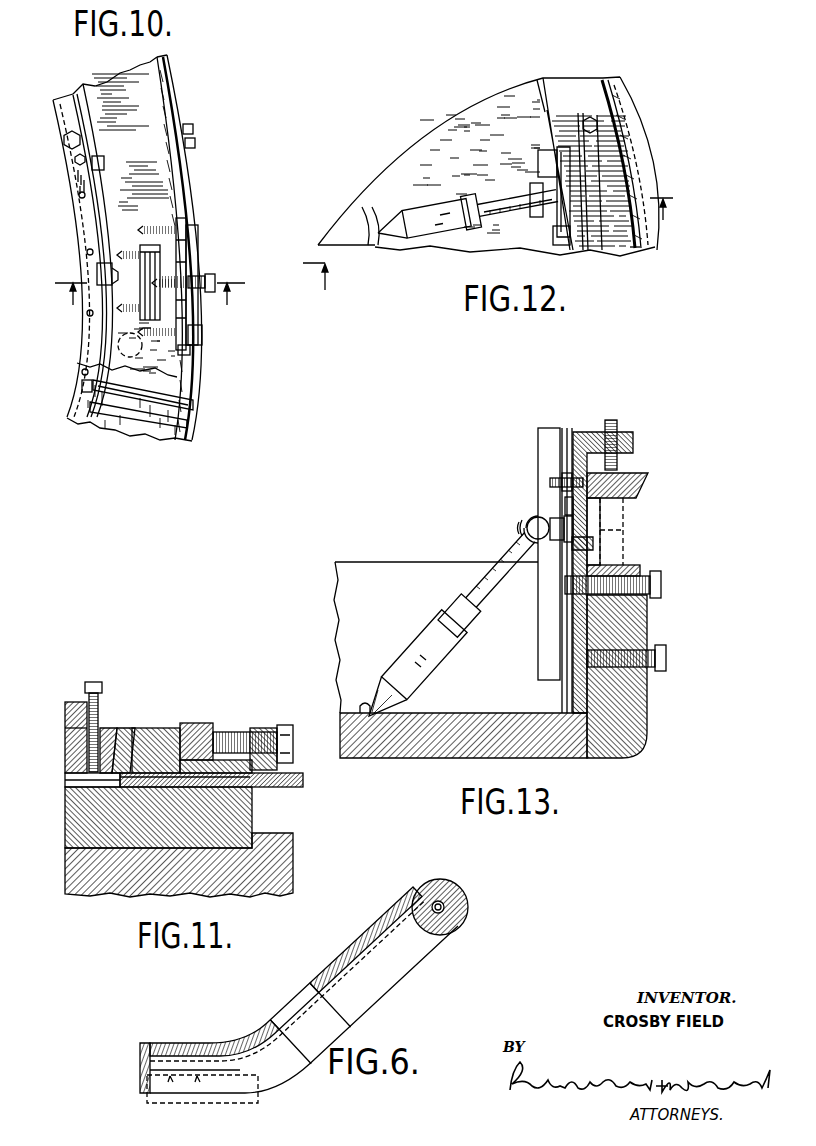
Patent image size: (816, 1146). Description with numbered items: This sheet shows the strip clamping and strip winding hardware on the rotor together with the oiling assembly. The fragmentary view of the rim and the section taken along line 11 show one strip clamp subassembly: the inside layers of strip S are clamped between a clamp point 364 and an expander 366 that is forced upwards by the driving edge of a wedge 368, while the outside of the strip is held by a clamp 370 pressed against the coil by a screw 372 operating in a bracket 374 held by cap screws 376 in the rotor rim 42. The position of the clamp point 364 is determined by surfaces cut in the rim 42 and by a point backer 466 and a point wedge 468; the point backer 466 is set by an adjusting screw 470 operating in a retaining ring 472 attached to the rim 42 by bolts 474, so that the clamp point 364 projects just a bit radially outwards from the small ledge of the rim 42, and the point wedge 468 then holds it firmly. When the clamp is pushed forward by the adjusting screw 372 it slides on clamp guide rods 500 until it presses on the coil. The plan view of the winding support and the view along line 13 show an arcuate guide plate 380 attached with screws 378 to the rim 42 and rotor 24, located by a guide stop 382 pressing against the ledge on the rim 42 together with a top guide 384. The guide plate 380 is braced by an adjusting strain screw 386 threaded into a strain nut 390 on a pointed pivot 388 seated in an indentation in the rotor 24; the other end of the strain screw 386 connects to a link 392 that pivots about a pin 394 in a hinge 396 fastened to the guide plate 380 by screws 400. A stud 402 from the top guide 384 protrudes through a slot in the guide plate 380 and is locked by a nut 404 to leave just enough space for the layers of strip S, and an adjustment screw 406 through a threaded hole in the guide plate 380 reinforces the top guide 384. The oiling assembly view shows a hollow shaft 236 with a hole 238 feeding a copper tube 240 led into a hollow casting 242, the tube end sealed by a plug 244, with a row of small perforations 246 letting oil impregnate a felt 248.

In FIG. 10, the section line 11— 11 is at (152, 295).
In FIG. 12, the section line 13— 13 is at (496, 246).
In FIG. 10, the rotor 24 is at (170, 80).
In FIG. 12, the rotor 24 is at (642, 250).
In FIG. 13, the rotor 24 is at (648, 632).
In FIG. 11, the rotor 24 is at (290, 864).
In FIG. 10, the rotor rim 42 is at (118, 80).
In FIG. 12, the rotor rim 42 is at (486, 167).
In FIG. 13, the rotor rim 42 is at (640, 567).
In FIG. 11, the rotor rim 42 is at (252, 813).
In FIG. 6, the shaft 236 is at (466, 897).
In FIG. 6, the hole 238 is at (432, 905).
In FIG. 6, the copper tube 240 is at (395, 945).
In FIG. 6, the hollow casting 242 is at (392, 924).
In FIG. 6, the plug 244 is at (160, 1058).
In FIG. 6, the perforations 246 is at (197, 1077).
In FIG. 6, the felt 248 is at (260, 1094).
In FIG. 10, the clamp point 364 is at (97, 275).
In FIG. 11, the clamp point 364 is at (112, 730).
In FIG. 10, the expander 366 is at (113, 287).
In FIG. 11, the expander 366 is at (122, 776).
In FIG. 10, the wedge 368 is at (195, 148).
In FIG. 11, the wedge 368 is at (277, 787).
In FIG. 10, the clamp 370 is at (147, 250).
In FIG. 11, the clamp 370 is at (197, 723).
In FIG. 10, the screw 372 is at (213, 280).
In FIG. 11, the screw 372 is at (290, 727).
In FIG. 10, the bracket 374 is at (190, 346).
In FIG. 11, the bracket 374 is at (262, 728).
In FIG. 10, the cap screw 376 is at (202, 335).
In FIG. 13, the screw 378 is at (661, 589).
In FIG. 12, the arcuate guide plate 380 is at (622, 180).
In FIG. 13, the arcuate guide plate 380 is at (540, 438).
In FIG. 13, the guide stop 382 is at (598, 553).
In FIG. 12, the top guide 384 is at (640, 143).
In FIG. 13, the top guide 384 is at (649, 480).
In FIG. 12, the adjusting strain screw 386 is at (488, 220).
In FIG. 13, the adjusting strain screw 386 is at (474, 622).
In FIG. 12, the pointed pivot 388 is at (400, 218).
In FIG. 13, the pointed pivot 388 is at (410, 693).
In FIG. 12, the strain nut 390 is at (447, 200).
In FIG. 13, the strain nut 390 is at (425, 645).
In FIG. 12, the link 392 is at (502, 200).
In FIG. 13, the link 392 is at (492, 573).
In FIG. 12, the pin 394 is at (540, 242).
In FIG. 13, the pin 394 is at (527, 530).
In FIG. 12, the hinge 396 is at (531, 167).
In FIG. 13, the hinge 396 is at (536, 516).
In FIG. 12, the screw 400 is at (551, 234).
In FIG. 13, the screw 400 is at (558, 543).
In FIG. 13, the stud 402 is at (560, 478).
In FIG. 13, the nut 404 is at (561, 504).
In FIG. 12, the adjustment screw 406 is at (600, 115).
In FIG. 13, the adjustment screw 406 is at (620, 430).
In FIG. 10, the point backer 466 is at (97, 268).
In FIG. 11, the point backer 466 is at (104, 727).
In FIG. 10, the point wedge 468 is at (193, 129).
In FIG. 11, the point wedge 468 is at (68, 781).
In FIG. 10, the adjusting screw 470 is at (96, 161).
In FIG. 11, the adjusting screw 470 is at (85, 686).
In FIG. 10, the retaining ring 472 is at (57, 124).
In FIG. 11, the retaining ring 472 is at (65, 718).
In FIG. 10, the bolt 474 is at (82, 139).
In FIG. 10, the clamp guide rod 500 is at (195, 258).
In FIG. 13, the strip S is at (624, 523).